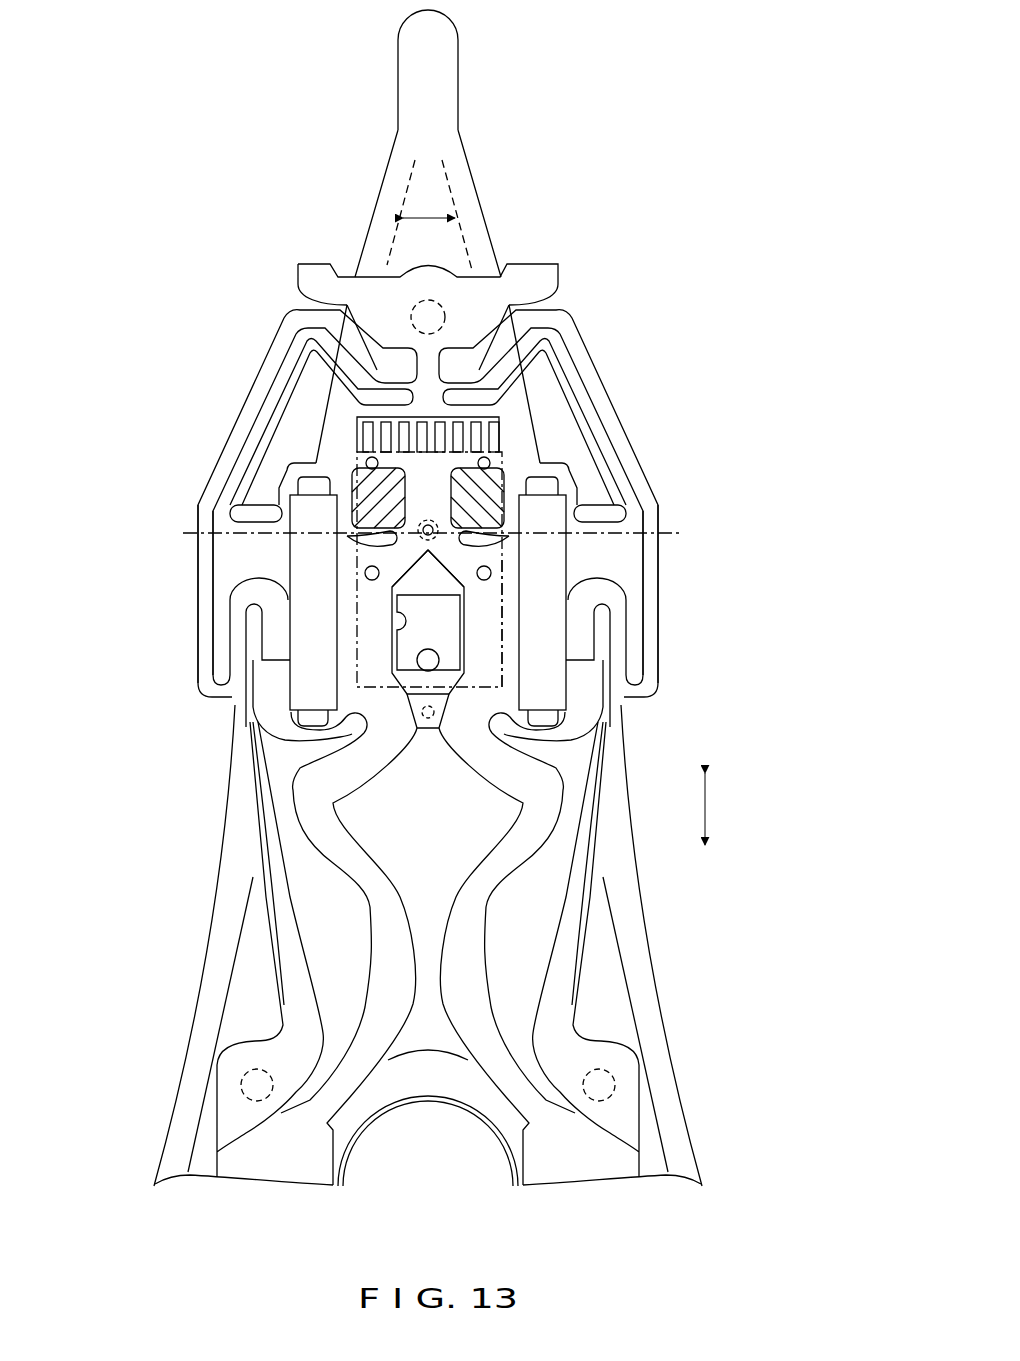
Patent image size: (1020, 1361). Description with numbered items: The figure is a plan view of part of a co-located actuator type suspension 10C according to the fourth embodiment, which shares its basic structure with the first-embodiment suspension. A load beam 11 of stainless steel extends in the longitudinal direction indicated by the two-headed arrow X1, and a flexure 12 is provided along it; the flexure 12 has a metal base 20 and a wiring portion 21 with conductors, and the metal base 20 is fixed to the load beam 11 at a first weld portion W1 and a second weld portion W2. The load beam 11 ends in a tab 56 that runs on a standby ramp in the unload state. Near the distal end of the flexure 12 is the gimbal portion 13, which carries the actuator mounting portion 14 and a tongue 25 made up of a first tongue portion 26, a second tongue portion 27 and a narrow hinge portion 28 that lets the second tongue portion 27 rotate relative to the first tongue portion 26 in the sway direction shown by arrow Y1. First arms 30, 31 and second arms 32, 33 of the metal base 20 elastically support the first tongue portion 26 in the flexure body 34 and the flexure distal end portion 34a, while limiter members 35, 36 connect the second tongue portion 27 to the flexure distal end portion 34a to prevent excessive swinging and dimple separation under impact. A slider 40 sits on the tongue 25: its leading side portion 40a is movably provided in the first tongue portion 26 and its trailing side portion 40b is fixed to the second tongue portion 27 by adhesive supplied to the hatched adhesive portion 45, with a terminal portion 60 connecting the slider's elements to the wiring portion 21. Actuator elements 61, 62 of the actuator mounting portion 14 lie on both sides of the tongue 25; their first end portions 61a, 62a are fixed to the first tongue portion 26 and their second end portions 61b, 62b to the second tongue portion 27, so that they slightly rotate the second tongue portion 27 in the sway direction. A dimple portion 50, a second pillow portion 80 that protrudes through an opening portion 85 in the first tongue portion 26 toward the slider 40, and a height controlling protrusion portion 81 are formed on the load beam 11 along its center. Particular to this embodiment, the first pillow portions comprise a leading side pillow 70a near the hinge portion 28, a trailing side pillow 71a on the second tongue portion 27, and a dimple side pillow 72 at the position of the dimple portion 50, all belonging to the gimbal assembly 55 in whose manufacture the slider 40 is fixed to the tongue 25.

The suspension 10C is at (727, 243).
The load beam 11 is at (618, 1003).
The flexure 12 is at (210, 1131).
The gimbal portion 13 is at (540, 413).
The actuator mounting portion 14 is at (622, 510).
The metal base 20 is at (257, 1046).
The wiring portion 21 is at (375, 930).
The tongue 25 is at (588, 743).
The first tongue portion 26 is at (507, 625).
The second tongue portion 27 is at (505, 470).
The hinge portion 28 is at (428, 574).
The first arm 30 is at (277, 901).
The first arm 31 is at (583, 930).
The second arm 32 is at (257, 388).
The second arm 33 is at (613, 393).
The flexure body 34 is at (352, 1137).
The flexure distal end portion 34a is at (486, 290).
The limiter member 35 is at (290, 367).
The limiter member 36 is at (573, 357).
The slider 40 is at (680, 533).
The leading side portion 40a is at (305, 702).
The trailing side portion 40b is at (355, 421).
The adhesive portion 45 is at (284, 500).
The dimple portion 50 is at (428, 519).
The gimbal assembly 55 is at (205, 835).
The tab 56 is at (447, 66).
The terminal portion 60 is at (548, 300).
The actuator element 61 is at (300, 552).
The first end portion 61a is at (365, 722).
The second end portion 61b is at (368, 490).
The actuator element 62 is at (550, 587).
The first end portion 62a is at (560, 742).
The second end portion 62b is at (492, 476).
The leading side pillow 70a is at (366, 576).
The trailing side pillow 71a is at (365, 463).
The dimple side pillow 72 is at (360, 540).
The second pillow portion 80 is at (428, 649).
The height controlling protrusion portion 81 is at (428, 719).
The opening portion 85 is at (393, 630).
The first weld portion W1 is at (411, 306).
The second weld portion W2 is at (240, 1083).
The longitudinal direction X1 is at (710, 805).
The sway direction Y1 is at (432, 216).